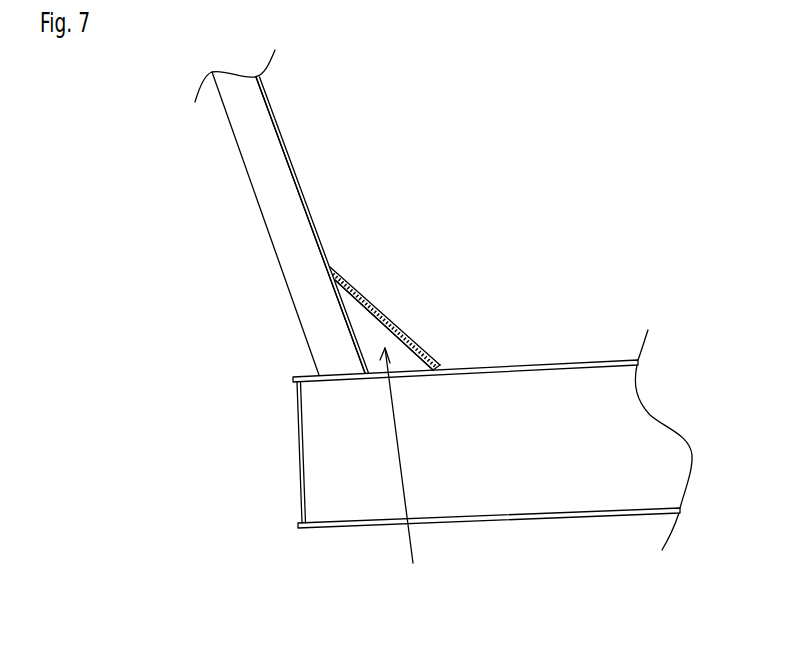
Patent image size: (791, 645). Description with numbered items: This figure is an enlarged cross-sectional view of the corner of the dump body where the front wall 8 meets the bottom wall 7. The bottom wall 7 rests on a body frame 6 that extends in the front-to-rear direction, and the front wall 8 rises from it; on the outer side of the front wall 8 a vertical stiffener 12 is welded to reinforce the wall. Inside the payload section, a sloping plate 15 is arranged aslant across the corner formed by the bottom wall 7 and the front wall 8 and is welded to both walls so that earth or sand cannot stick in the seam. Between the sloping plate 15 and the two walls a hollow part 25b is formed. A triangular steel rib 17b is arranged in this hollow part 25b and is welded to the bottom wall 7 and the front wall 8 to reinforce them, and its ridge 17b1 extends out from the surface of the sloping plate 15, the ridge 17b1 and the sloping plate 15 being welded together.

The stiffener 12 is at (242, 160).
The front wall 8 is at (303, 205).
The ridge 17b1 is at (371, 308).
The sloping plate 15 is at (406, 343).
The hollow part 25b is at (356, 336).
The bottom wall 7 is at (532, 365).
The body frame 6 is at (567, 517).
The rib 17b is at (405, 471).